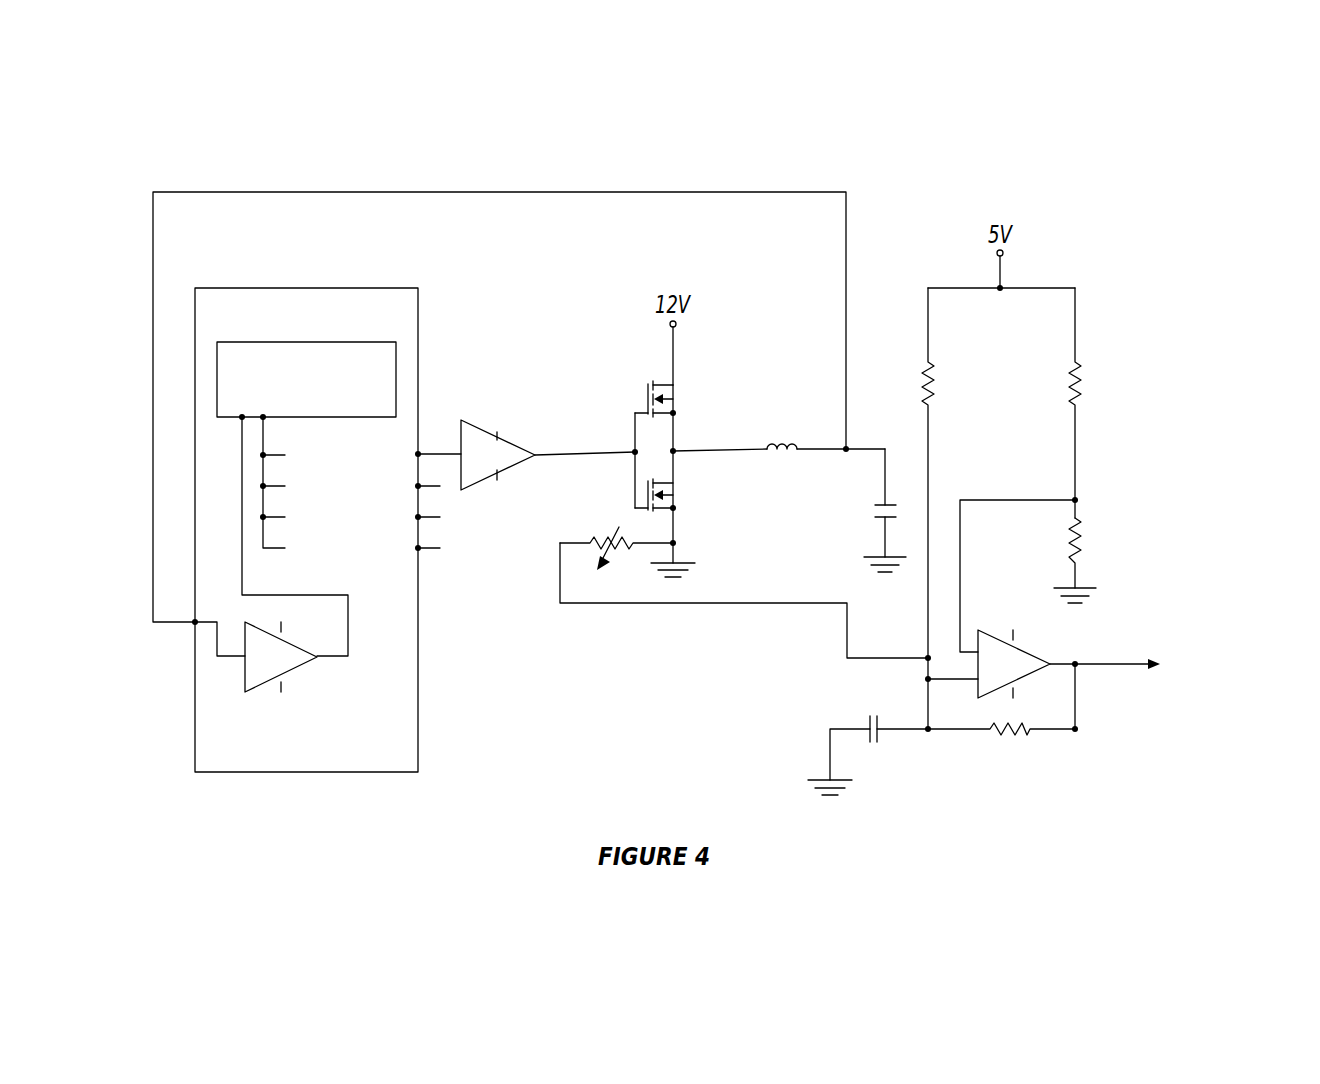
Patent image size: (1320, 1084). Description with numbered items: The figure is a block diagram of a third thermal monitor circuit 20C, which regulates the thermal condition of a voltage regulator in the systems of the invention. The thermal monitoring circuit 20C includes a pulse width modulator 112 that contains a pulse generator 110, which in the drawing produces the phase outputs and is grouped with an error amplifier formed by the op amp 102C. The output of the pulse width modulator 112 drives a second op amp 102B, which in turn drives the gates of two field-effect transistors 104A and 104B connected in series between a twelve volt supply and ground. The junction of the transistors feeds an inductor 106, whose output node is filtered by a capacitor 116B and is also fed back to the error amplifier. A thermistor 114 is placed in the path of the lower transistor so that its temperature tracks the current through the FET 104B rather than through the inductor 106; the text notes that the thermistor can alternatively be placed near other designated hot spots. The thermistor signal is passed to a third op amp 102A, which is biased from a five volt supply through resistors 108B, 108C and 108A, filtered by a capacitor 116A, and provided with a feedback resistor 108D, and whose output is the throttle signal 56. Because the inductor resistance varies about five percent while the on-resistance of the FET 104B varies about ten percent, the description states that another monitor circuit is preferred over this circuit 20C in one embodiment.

The thermal monitor circuit 20C is at (314, 98).
The pulse width modulator 112 is at (364, 288).
The pulse generator 110 is at (338, 342).
The op amp 102C is at (297, 668).
The op amp 102B is at (504, 470).
The field-effect transistor 104A is at (685, 416).
The field-effect transistor 104B is at (685, 495).
The thermistor 114 is at (744, 581).
The inductor 106 is at (779, 464).
The capacitor 116B is at (863, 510).
The resistor 108B is at (957, 510).
The resistor 108C is at (1050, 470).
The resistor 108A is at (1097, 560).
The op amp 102A is at (1043, 667).
The resistor 108D is at (1003, 717).
The capacitor 116A is at (868, 755).
The throttle signal 56 is at (1164, 666).